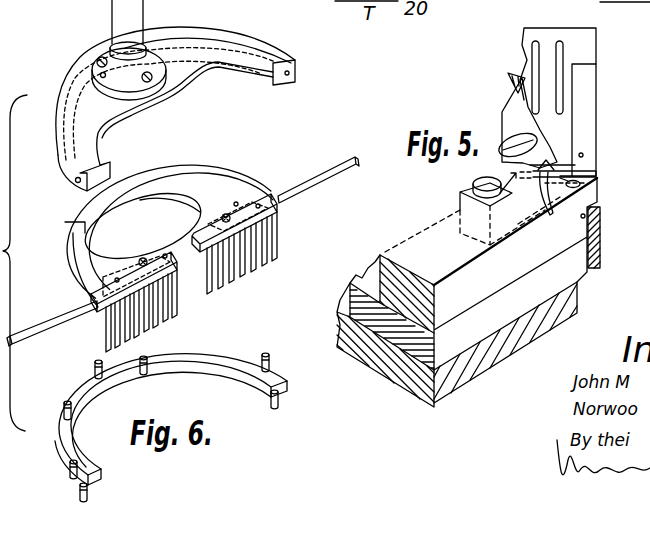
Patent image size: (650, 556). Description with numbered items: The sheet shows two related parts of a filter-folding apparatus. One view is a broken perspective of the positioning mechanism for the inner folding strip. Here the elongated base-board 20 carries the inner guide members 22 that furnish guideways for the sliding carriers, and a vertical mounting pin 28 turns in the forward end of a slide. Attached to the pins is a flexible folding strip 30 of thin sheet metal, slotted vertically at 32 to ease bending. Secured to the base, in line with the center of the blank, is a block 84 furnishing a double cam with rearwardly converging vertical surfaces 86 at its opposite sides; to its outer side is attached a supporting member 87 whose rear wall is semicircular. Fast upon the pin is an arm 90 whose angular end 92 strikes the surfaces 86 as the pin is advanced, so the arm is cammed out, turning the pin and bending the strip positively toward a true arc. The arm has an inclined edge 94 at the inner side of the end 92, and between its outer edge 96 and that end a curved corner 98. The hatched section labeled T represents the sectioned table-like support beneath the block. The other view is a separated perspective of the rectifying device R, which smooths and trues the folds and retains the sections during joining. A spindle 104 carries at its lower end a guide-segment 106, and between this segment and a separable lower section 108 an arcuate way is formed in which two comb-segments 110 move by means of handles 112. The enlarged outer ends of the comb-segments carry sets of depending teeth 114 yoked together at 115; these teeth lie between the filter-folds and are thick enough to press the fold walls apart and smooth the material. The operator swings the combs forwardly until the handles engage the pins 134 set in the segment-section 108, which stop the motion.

In FIG. 6, the rectifying device R is at (18, 263).
In FIG. 6, the spindle 104 is at (112, 10).
In FIG. 6, the guide-segment 106 is at (265, 46).
In FIG. 6, the separable lower section 108 is at (217, 368).
In FIG. 6, the comb-segments 110 is at (193, 200).
In FIG. 6, the handles 112 is at (59, 310).
In FIG. 6, the depending teeth 114 is at (174, 322).
In FIG. 6, the yoke 115 is at (117, 277).
In FIG. 6, the pins 134 is at (273, 399).
In FIG. 5, the base-board 20 is at (575, 265).
In FIG. 5, the inner guide members 22 is at (427, 240).
In FIG. 5, the table T is at (578, 302).
In FIG. 5, the vertical mounting pin 28 is at (587, 76).
In FIG. 5, the flexible folding strip 30 is at (596, 42).
In FIG. 5, the vertical slots 32 is at (559, 42).
In FIG. 5, the block 84 is at (508, 158).
In FIG. 5, the cam surfaces 86 is at (499, 139).
In FIG. 5, the supporting member 87 is at (508, 122).
In FIG. 5, the arm 90 is at (575, 168).
In FIG. 5, the angular end 92 is at (545, 168).
In FIG. 5, the inclined edge 94 is at (540, 163).
In FIG. 5, the outer edge 96 is at (580, 186).
In FIG. 5, the curved corner 98 is at (547, 208).